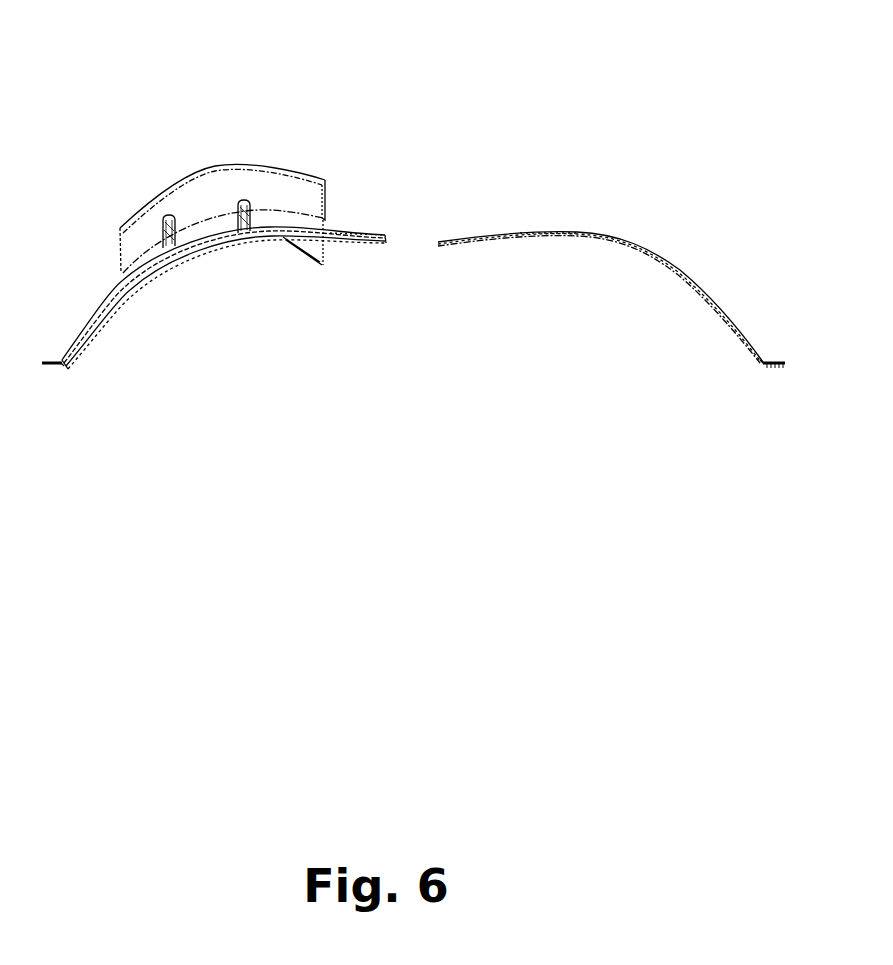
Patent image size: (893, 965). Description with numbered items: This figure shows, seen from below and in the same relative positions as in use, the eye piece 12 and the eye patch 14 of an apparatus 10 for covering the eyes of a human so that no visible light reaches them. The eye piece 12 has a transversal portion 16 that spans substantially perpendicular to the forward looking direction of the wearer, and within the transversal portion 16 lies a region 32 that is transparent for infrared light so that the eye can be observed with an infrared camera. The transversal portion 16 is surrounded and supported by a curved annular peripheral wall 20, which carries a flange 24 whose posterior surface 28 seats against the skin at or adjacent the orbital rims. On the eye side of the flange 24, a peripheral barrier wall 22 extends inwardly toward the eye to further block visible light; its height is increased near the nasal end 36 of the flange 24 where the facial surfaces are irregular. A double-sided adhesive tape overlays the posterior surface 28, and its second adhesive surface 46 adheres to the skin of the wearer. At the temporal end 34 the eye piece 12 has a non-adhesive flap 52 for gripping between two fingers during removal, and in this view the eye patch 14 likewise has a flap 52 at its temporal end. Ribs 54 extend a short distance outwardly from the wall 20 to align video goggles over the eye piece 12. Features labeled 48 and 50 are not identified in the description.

The apparatus 10 is at (418, 78).
The eye piece 12 is at (150, 190).
The eye patch 14 is at (672, 258).
The transversal portion 16 is at (238, 165).
The curved annular peripheral wall 20 is at (120, 250).
The peripheral barrier wall 22 is at (310, 258).
The flange 24 is at (110, 295).
The posterior surface 28 is at (190, 250).
The region transparent for infrared light 32 is at (285, 172).
The temporal end 34 is at (72, 360).
The nasal end 36 is at (382, 237).
The second adhesive surface 46 is at (363, 240).
The front portion of rear panel 48 is at (555, 237).
The front support 50 is at (48, 365).
The non-adhesive flap 52 is at (770, 365).
The ribs 54 is at (247, 232).